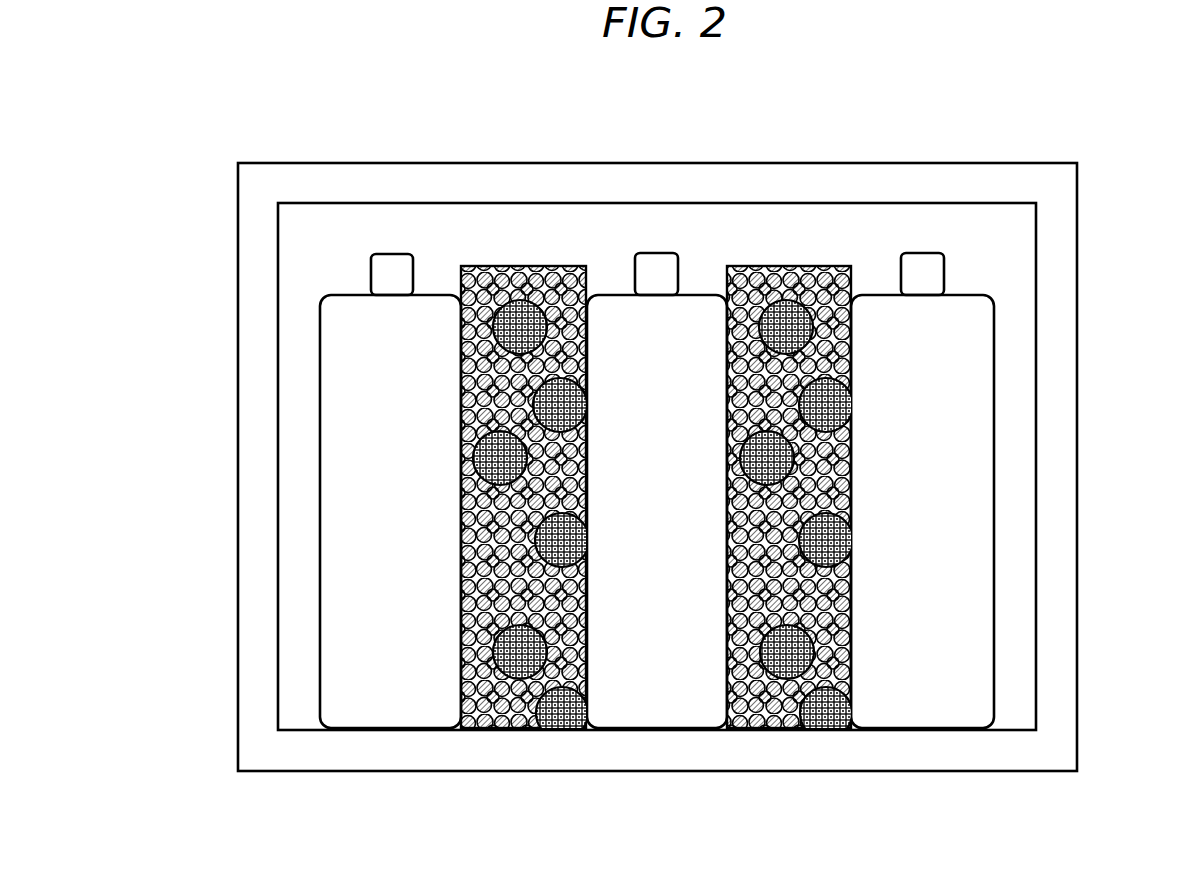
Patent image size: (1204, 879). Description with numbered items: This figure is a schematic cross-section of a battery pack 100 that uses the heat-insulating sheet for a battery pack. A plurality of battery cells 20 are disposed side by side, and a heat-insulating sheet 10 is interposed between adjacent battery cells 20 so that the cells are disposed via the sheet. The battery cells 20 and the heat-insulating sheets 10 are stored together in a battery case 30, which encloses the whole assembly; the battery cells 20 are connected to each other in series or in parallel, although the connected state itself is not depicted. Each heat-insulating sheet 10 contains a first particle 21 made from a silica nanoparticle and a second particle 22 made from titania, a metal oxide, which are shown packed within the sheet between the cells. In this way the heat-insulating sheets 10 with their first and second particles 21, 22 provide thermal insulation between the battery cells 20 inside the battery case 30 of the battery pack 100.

The battery pack 100 is at (337, 139).
The heat-insulating sheet 10 is at (533, 265).
The battery cell 20 is at (970, 502).
The battery case 30 is at (1067, 273).
The first particle 21 is at (494, 728).
The second particle 22 is at (503, 660).